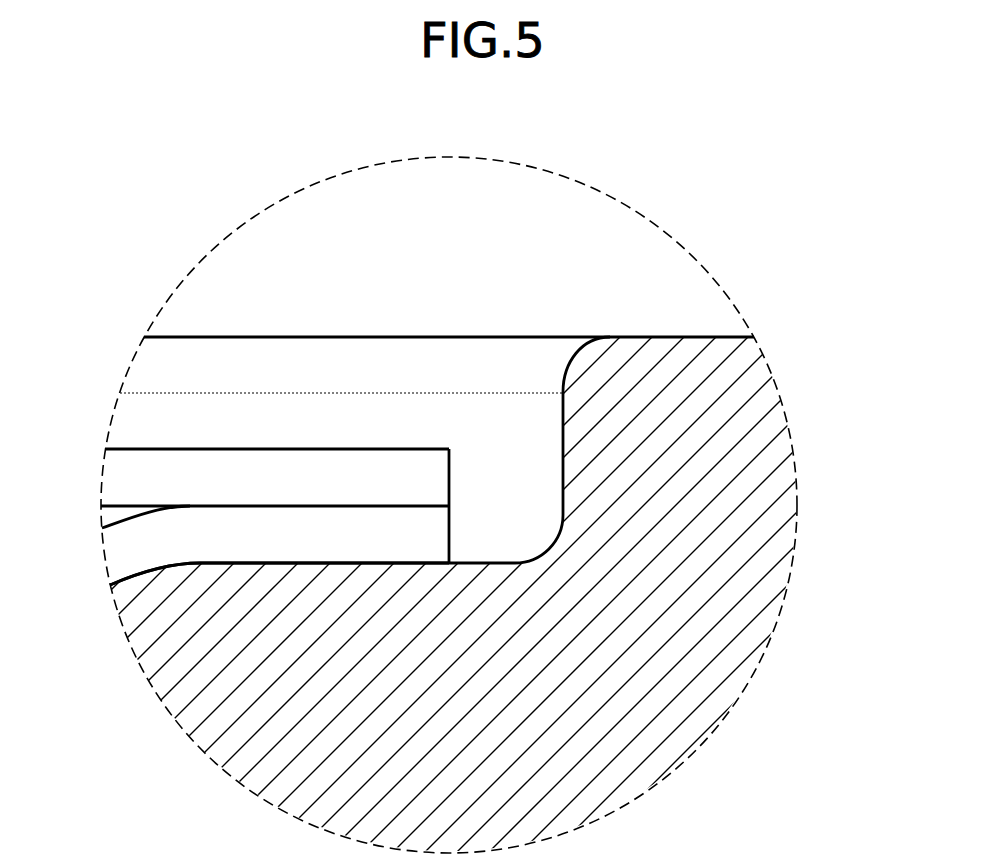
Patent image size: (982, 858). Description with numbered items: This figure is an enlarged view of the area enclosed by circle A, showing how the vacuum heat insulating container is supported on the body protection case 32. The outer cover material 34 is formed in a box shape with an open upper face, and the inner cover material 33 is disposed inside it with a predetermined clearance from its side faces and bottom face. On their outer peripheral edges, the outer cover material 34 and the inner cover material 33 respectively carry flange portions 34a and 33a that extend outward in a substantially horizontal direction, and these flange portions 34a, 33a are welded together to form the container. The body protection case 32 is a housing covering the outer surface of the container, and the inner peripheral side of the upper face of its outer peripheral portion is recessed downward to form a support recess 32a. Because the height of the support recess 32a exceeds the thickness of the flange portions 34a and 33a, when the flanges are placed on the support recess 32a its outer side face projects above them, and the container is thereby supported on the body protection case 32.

The circle A is at (557, 172).
The body protection case 32 is at (755, 370).
The support recess 32a is at (563, 477).
The inner cover material 33 is at (128, 472).
The flange portion 33a is at (410, 470).
The outer cover material 34 is at (128, 551).
The flange portion 34a is at (433, 536).